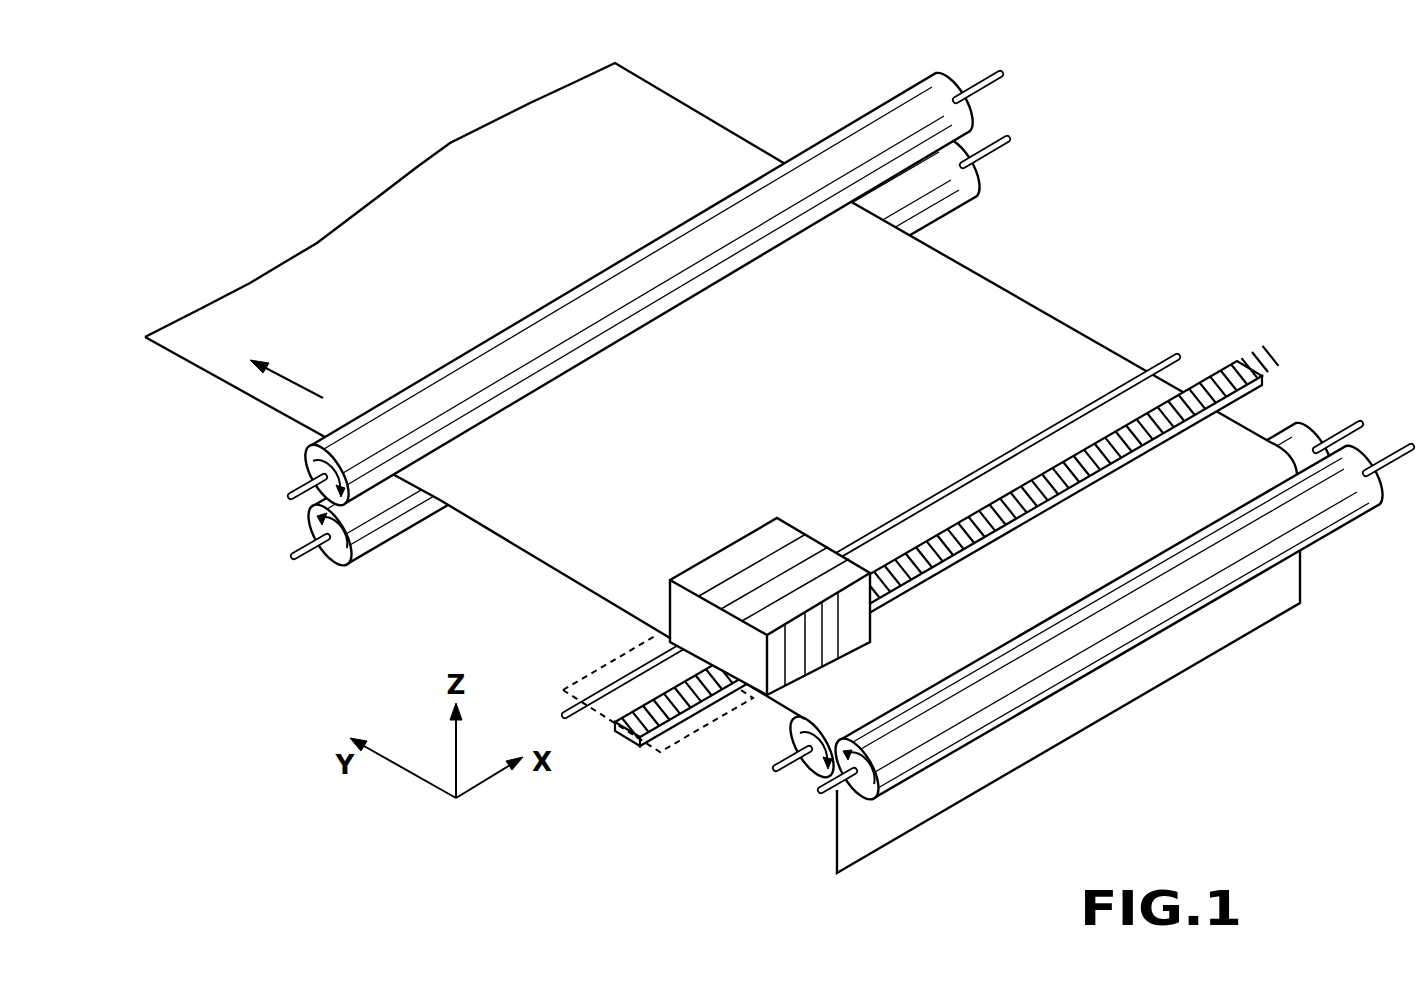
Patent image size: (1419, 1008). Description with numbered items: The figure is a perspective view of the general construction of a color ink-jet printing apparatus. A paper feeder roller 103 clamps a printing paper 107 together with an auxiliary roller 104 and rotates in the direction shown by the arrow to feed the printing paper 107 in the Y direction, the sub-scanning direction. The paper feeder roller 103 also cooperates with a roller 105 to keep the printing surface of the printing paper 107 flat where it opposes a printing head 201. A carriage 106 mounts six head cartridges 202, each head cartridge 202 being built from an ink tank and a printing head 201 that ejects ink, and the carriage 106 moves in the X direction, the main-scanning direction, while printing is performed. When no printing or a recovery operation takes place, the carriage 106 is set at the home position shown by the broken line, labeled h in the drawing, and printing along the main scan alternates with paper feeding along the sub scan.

The paper feeder roller 103 is at (908, 93).
The auxiliary roller 104 is at (957, 207).
The roller 105 is at (1290, 425).
The carriage 106 is at (857, 641).
The printing paper 107 is at (703, 128).
The printing head 201 is at (662, 668).
The head cartridge 202 is at (778, 528).
The head moving range h is at (687, 723).